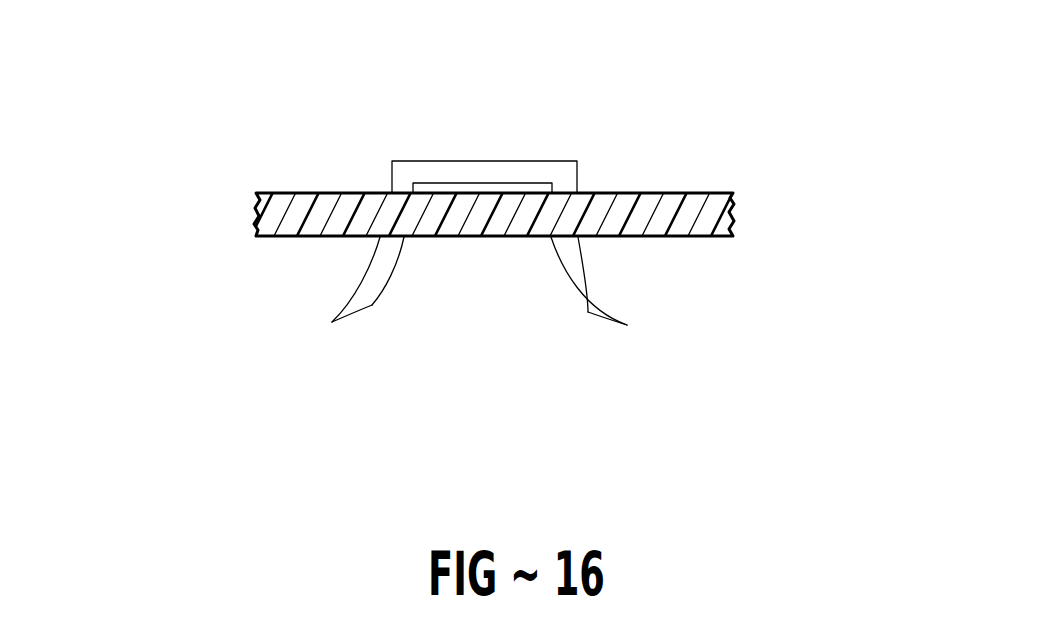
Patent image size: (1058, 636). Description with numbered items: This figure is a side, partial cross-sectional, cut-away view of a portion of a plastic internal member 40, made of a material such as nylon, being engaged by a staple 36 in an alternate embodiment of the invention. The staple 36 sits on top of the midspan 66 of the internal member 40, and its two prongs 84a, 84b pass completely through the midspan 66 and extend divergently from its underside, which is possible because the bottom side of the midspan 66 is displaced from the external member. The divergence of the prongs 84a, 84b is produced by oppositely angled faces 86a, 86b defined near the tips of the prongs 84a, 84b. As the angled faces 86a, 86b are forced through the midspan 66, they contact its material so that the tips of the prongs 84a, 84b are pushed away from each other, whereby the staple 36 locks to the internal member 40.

The internal member 40 is at (300, 178).
The staple 36 is at (512, 155).
The midspan 66 is at (618, 192).
The prong 84a is at (372, 268).
The prong 84b is at (585, 273).
The angled face 86a is at (352, 317).
The angled face 86b is at (604, 318).